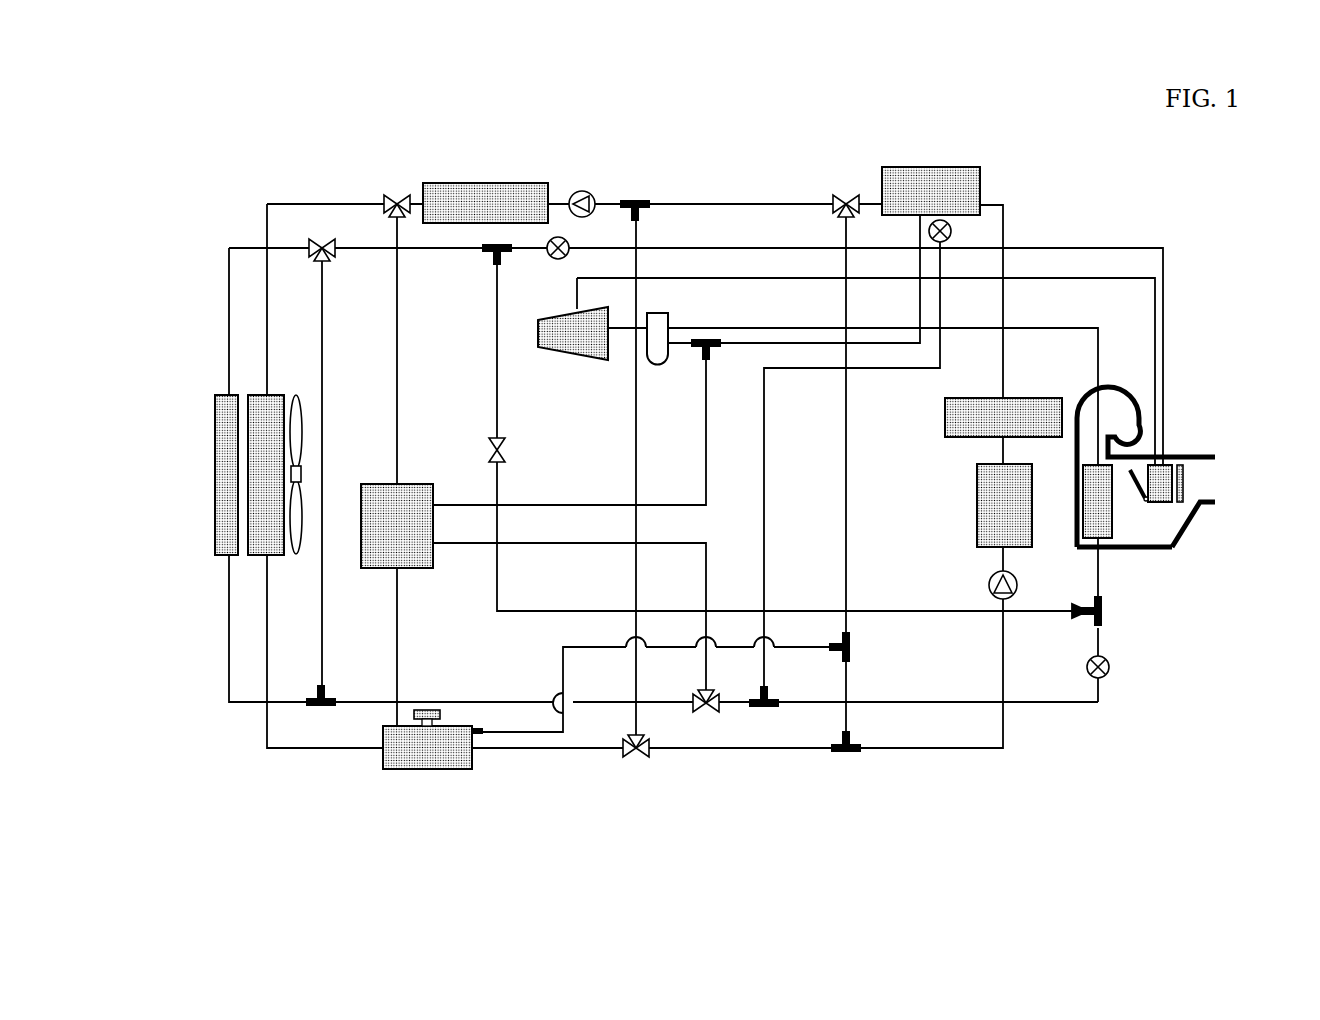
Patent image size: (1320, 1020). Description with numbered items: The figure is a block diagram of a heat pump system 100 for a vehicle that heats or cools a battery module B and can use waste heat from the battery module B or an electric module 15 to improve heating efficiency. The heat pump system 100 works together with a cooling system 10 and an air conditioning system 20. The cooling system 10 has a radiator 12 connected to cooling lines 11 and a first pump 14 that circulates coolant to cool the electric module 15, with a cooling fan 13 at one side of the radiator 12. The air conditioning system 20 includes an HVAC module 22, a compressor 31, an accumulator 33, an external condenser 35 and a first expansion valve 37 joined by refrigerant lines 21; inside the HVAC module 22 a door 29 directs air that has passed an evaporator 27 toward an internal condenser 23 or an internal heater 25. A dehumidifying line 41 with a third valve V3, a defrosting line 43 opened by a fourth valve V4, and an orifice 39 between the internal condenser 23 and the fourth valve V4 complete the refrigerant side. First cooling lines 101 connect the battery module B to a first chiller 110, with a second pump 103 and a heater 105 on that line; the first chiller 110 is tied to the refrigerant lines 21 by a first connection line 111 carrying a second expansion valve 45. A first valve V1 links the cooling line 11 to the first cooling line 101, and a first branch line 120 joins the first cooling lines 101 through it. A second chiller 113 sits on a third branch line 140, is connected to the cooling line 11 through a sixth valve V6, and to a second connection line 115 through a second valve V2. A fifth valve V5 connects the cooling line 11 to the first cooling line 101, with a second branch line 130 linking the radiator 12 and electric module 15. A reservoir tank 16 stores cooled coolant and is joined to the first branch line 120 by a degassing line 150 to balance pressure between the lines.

The heat pump system 100 is at (710, 109).
The cooling system 10 is at (286, 184).
The cooling line 11 is at (335, 203).
The radiator 12 is at (270, 395).
The cooling fan 13 is at (296, 556).
The first pump 14 is at (582, 191).
The electric module 15 is at (500, 183).
The reservoir tank 16 is at (383, 767).
The air conditioning system 20 is at (212, 306).
The refrigerant line 21 is at (1128, 278).
The HVAC module 22 is at (1205, 428).
The internal condenser 23 is at (1160, 500).
The internal heater 25 is at (1185, 478).
The evaporator 27 is at (1103, 522).
The opening or closing door 29 is at (1158, 500).
The compressor 31 is at (548, 359).
The accumulator 33 is at (669, 320).
The external condenser 35 is at (215, 477).
The first expansion valve 37 is at (1110, 667).
The orifice 39 is at (556, 259).
The dehumidifying line 41 is at (497, 400).
The defrosting line 43 is at (323, 393).
The second expansion valve 45 is at (951, 231).
The first cooling line 101 is at (1004, 217).
The second pump 103 is at (989, 585).
The heater 105 is at (1045, 398).
The first chiller 110 is at (948, 167).
The first connection line 111 is at (780, 345).
The second chiller 113 is at (433, 569).
The second connection line 115 is at (590, 543).
The first branch line 120 is at (847, 432).
The second branch line 130 is at (636, 427).
The third branch line 140 is at (398, 333).
The degassing line 150 is at (527, 733).
The battery module B is at (977, 503).
The first valve V1 is at (846, 195).
The second valve V2 is at (700, 700).
The third valve V3 is at (505, 452).
The fourth valve V4 is at (325, 260).
The fifth valve V5 is at (634, 761).
The sixth valve V6 is at (397, 195).